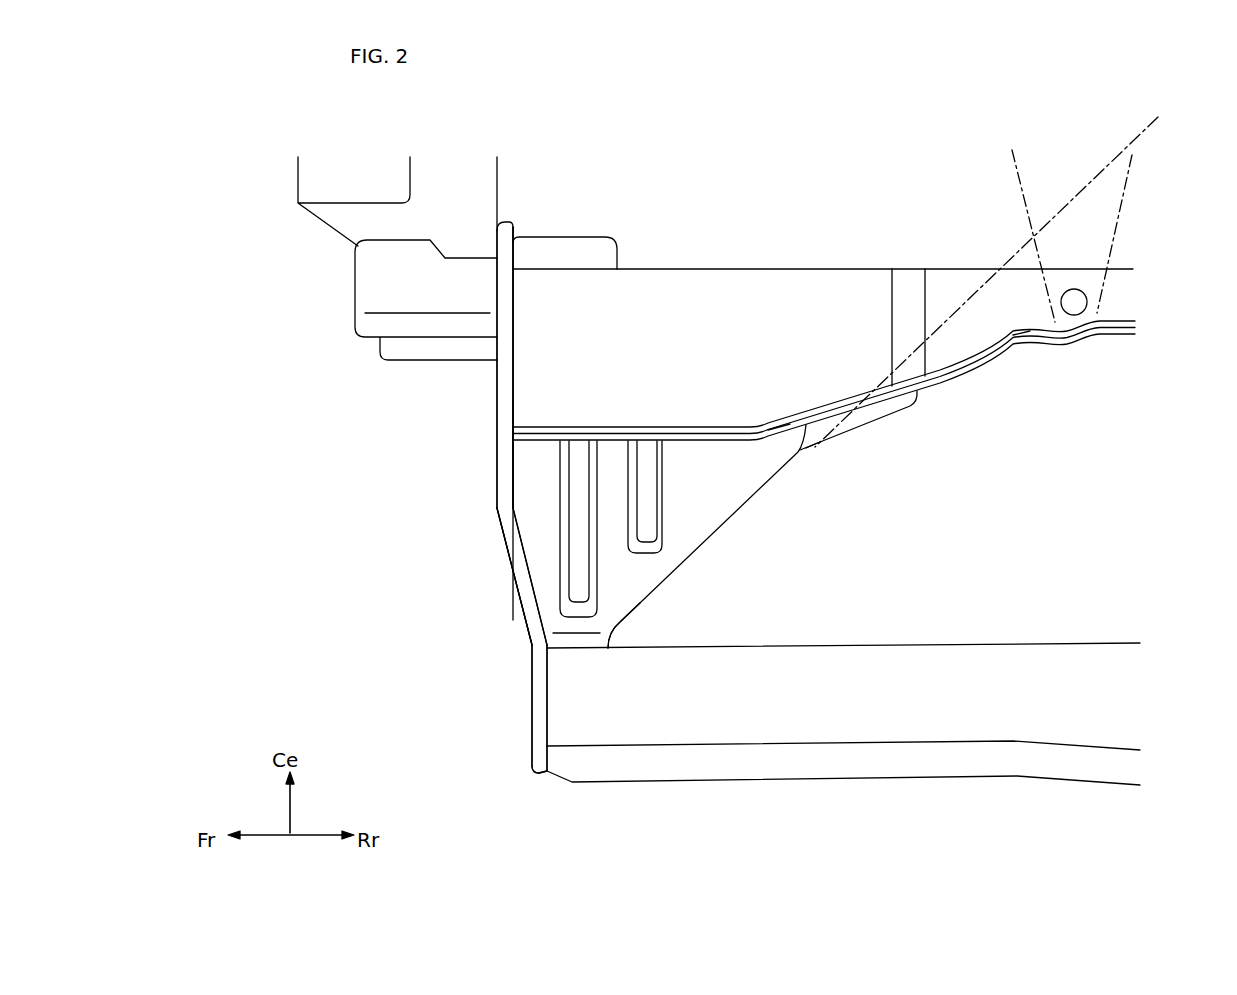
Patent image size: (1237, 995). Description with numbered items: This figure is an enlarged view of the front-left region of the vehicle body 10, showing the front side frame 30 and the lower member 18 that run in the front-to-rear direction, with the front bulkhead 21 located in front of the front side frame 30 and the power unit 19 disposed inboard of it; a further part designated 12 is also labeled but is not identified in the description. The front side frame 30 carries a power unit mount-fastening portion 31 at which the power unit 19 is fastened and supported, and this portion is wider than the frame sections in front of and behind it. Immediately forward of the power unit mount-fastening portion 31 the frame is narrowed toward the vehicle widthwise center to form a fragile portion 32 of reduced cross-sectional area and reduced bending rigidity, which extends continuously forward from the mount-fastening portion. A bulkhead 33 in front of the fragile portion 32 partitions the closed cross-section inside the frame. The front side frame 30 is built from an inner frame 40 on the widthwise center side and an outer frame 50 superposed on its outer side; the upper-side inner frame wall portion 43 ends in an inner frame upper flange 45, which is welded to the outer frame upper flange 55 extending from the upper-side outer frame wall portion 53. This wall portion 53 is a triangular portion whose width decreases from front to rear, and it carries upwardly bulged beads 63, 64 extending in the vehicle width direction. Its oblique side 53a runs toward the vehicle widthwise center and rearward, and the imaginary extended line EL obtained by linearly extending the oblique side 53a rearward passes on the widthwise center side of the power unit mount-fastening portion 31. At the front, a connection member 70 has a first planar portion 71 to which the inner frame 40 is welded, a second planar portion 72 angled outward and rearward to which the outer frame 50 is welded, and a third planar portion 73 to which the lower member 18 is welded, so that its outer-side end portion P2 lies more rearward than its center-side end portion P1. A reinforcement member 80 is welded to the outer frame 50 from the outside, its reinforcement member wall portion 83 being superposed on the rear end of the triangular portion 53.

The vehicle body 10 is at (264, 139).
The roof panel 12 is at (823, 212).
The lower member 18 is at (902, 778).
The power unit 19 is at (1122, 203).
The front bulkhead 21 is at (298, 180).
The front side frame 30 is at (392, 458).
The power unit mount-fastening portion 31 is at (1081, 316).
The fragile portion 32 is at (1027, 345).
The bulkhead 33 is at (911, 282).
The inner frame 40 is at (526, 410).
The inner frame wall portion 43 is at (716, 298).
The inner frame upper flange 45 is at (808, 440).
The outer frame 50 is at (520, 499).
The outer frame wall portion 53 is at (725, 500).
The oblique side 53a is at (683, 560).
The outer frame upper flange 55 is at (733, 445).
The bead 63 is at (583, 542).
The bead 64 is at (648, 478).
The connection member 70 is at (522, 729).
The first planar portion 71 is at (498, 388).
The second planar portion 72 is at (513, 560).
The third planar portion 73 is at (528, 683).
The reinforcement member 80 is at (893, 420).
The reinforcement member wall portion 83 is at (847, 428).
The vehicle widthwise center-side end portion P1 is at (510, 222).
The vehicle outer-side end portion P2 is at (543, 773).
The imaginary extended line EL is at (1142, 132).